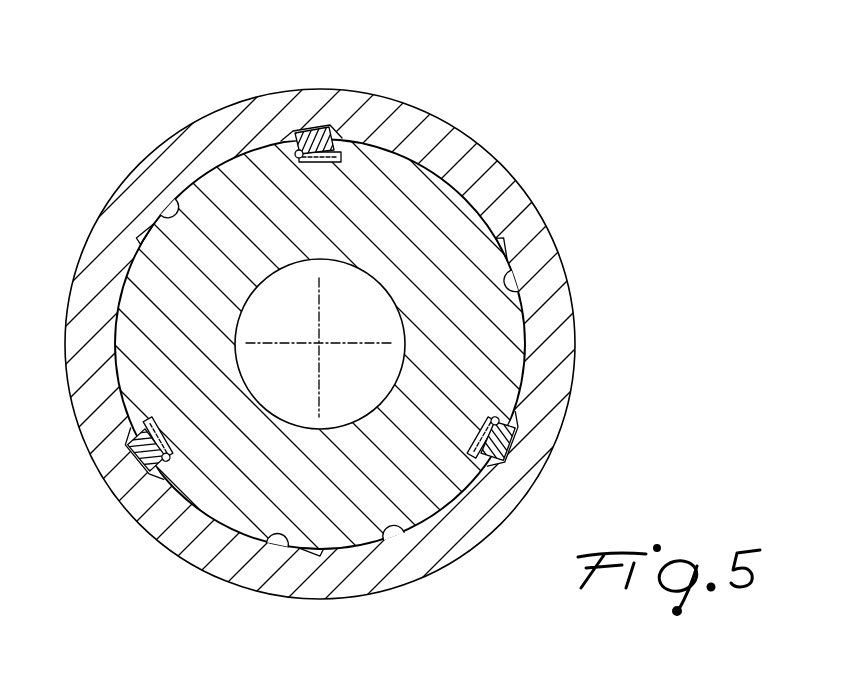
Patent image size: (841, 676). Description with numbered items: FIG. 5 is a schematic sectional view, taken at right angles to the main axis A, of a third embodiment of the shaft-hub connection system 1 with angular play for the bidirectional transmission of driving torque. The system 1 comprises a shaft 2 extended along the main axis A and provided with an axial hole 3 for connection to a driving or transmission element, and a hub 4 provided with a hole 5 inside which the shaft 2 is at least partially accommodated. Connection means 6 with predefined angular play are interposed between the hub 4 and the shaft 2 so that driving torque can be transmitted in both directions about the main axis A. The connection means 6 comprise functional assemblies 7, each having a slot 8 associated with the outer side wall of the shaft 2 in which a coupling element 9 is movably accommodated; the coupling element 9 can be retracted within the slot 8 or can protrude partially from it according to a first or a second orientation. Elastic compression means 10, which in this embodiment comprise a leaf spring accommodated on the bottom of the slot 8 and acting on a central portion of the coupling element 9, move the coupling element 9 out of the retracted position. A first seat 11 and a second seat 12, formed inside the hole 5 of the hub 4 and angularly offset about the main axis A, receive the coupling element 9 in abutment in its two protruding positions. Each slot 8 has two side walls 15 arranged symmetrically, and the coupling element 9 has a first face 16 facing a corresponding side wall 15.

The shaft-hub connection system 1 is at (420, 338).
The shaft 2 is at (420, 193).
The axial hole 3 is at (342, 422).
The hub 4 is at (583, 322).
The hole 5 is at (398, 534).
The connection means 6 is at (420, 338).
The functional assembly 7 is at (131, 215).
The slot 8 is at (340, 140).
The coupling element 9 is at (331, 121).
The elastic compression means 10 is at (327, 168).
The first seat 11 is at (318, 126).
The second seat 12 is at (168, 200).
The side walls 15 is at (296, 162).
The first face 16 is at (264, 146).
The main axis A is at (322, 340).